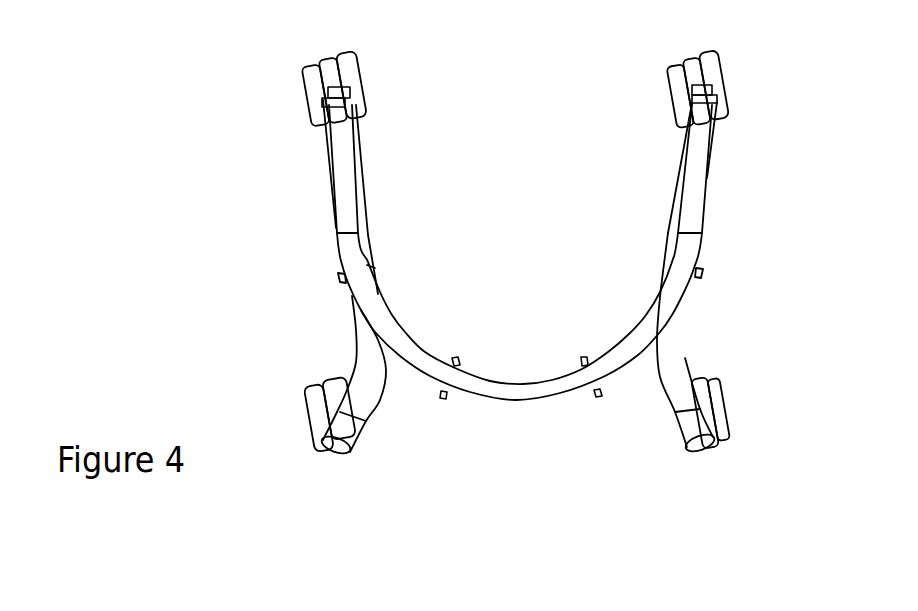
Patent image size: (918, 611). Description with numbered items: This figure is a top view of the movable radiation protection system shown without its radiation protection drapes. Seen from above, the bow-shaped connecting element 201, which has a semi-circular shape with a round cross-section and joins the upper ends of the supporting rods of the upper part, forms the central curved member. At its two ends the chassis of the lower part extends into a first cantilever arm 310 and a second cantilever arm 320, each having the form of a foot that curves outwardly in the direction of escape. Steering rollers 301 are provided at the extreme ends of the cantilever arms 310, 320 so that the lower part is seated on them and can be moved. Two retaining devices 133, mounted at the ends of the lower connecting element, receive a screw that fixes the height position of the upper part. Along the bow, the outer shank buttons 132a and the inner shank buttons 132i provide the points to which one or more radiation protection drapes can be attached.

The connecting element 201 is at (695, 212).
The steering rollers 301 is at (345, 68).
The retaining device 133 is at (349, 91).
The first cantilever arm 310 is at (367, 363).
The second cantilever arm 320 is at (672, 357).
The inner shank buttons 132i is at (583, 360).
The outer shank buttons 132a is at (598, 395).